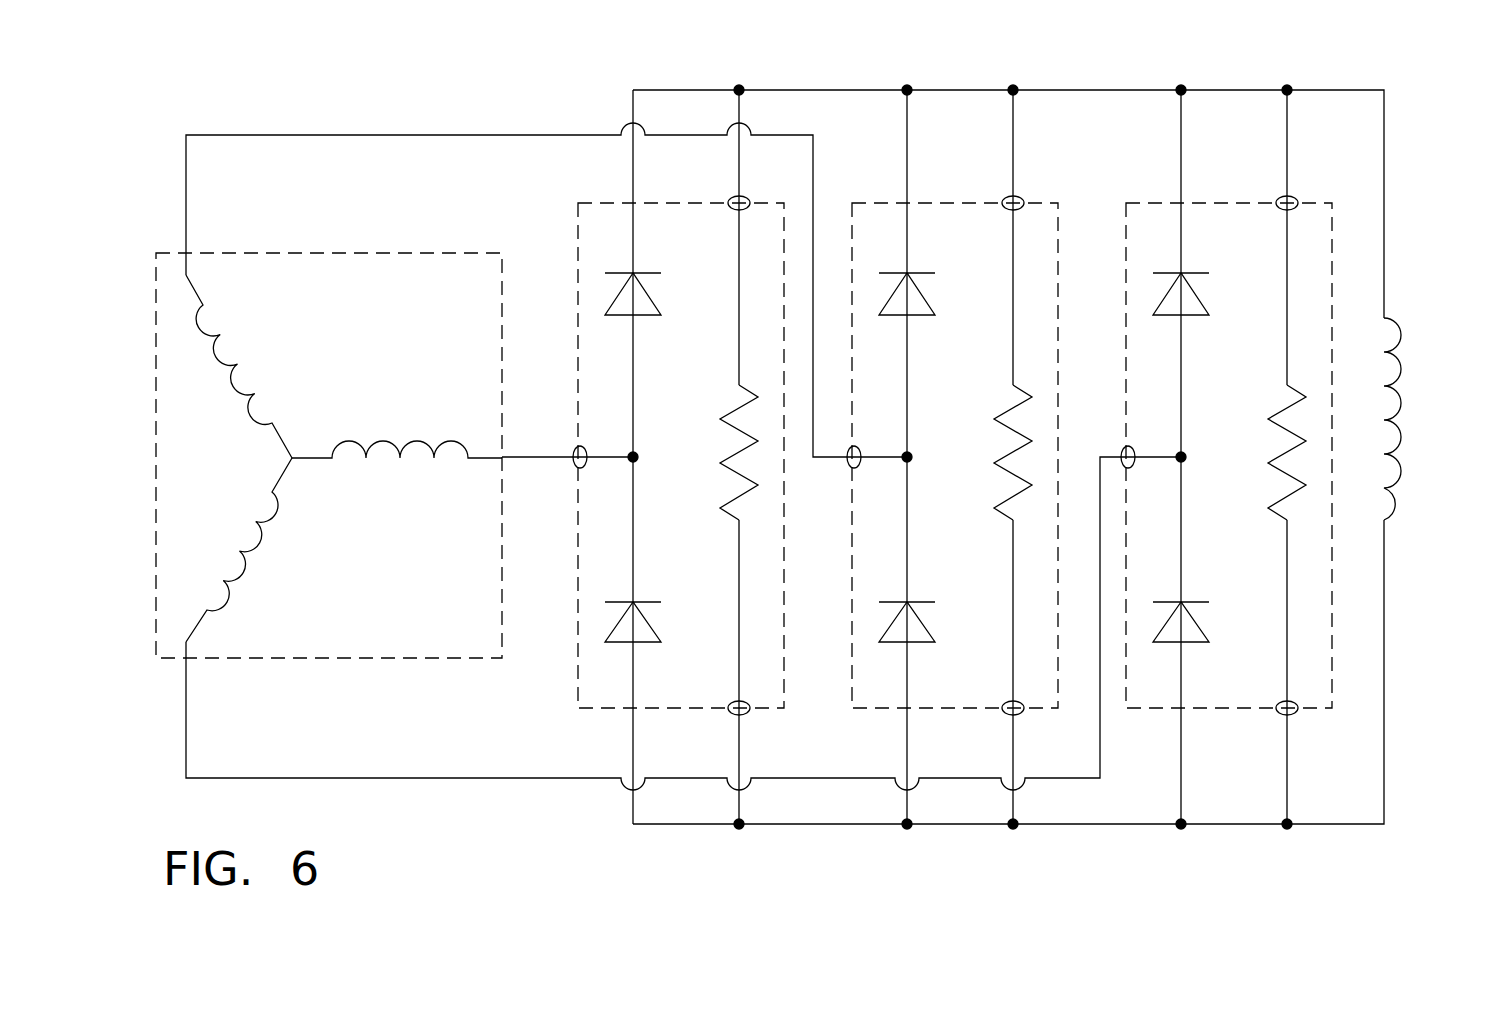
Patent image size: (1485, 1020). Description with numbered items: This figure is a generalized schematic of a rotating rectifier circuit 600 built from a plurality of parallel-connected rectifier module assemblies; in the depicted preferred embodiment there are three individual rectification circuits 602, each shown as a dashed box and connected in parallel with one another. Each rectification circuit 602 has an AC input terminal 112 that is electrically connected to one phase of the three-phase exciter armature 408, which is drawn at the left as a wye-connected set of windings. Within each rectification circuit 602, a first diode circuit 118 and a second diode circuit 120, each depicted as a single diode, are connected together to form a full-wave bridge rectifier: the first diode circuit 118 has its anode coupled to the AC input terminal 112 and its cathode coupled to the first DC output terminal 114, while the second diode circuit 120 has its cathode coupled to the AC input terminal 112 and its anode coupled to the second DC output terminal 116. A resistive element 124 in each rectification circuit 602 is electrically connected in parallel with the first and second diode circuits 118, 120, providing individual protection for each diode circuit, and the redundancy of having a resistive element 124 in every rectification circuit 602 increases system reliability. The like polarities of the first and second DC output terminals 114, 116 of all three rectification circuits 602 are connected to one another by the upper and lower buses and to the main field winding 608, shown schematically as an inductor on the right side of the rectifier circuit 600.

The rectifier circuit 600 is at (1330, 62).
The rectification circuit 602 is at (612, 202).
The three-phase exciter armature 408 is at (265, 250).
The main field winding 608 is at (1388, 318).
The AC input terminal 112 is at (580, 468).
The first DC output terminal 114 is at (732, 208).
The second DC output terminal 116 is at (748, 713).
The first diode circuit 118 is at (648, 316).
The second diode circuit 120 is at (650, 643).
The resistive element 124 is at (725, 415).